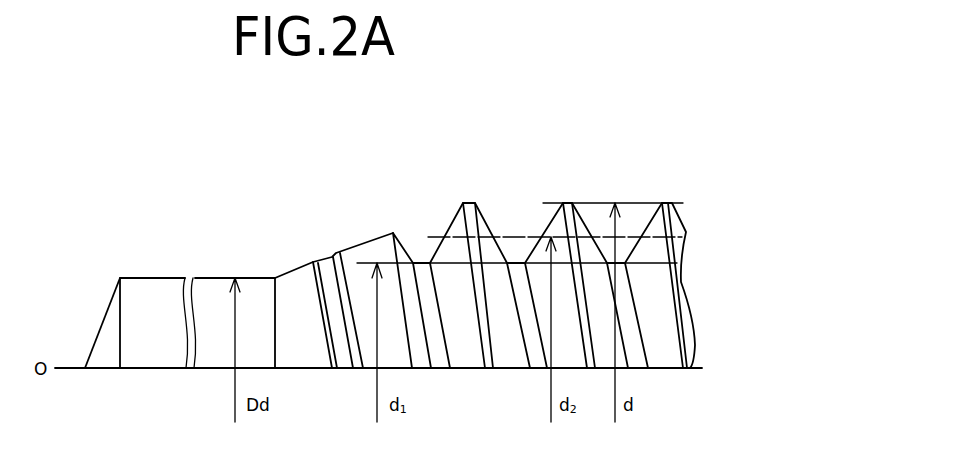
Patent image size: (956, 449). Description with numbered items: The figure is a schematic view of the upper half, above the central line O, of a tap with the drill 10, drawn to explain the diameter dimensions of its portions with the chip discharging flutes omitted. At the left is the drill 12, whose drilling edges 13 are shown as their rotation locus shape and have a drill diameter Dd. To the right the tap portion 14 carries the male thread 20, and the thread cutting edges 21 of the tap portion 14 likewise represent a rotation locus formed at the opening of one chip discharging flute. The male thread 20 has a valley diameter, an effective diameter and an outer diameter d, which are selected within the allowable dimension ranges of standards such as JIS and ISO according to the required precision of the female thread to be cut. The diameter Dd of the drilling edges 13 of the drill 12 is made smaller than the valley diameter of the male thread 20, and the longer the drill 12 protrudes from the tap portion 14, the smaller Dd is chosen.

The tap with the drill 10 is at (655, 167).
The drill 12 is at (147, 292).
The drilling edges 13 is at (95, 335).
The tap portion 14 is at (408, 192).
The male thread 20 is at (555, 205).
The thread cutting edges 21 is at (459, 222).